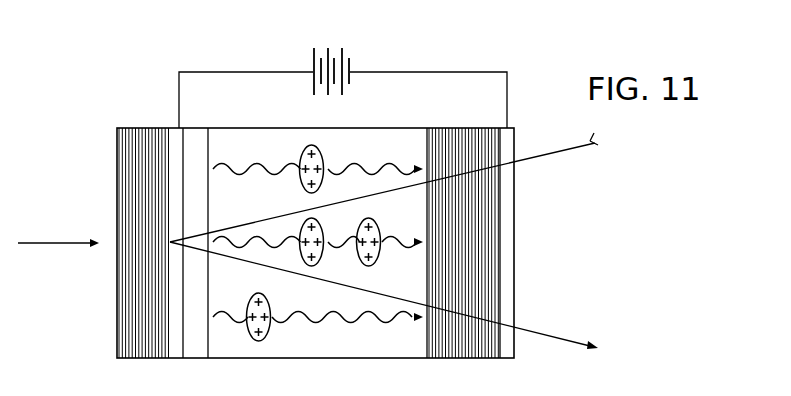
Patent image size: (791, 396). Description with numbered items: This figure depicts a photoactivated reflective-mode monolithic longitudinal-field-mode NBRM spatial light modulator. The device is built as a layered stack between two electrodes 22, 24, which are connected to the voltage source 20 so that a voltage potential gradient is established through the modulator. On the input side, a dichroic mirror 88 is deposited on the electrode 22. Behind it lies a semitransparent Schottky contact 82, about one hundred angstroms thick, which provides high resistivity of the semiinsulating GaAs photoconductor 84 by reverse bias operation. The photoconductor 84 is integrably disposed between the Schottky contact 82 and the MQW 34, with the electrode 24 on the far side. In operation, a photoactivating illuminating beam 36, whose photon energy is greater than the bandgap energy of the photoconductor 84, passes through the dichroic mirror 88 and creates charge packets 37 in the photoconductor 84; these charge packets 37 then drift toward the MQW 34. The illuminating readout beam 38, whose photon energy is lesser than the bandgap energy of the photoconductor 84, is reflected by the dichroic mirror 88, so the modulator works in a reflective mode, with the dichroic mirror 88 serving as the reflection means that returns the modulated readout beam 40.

The voltage source 20 is at (315, 83).
The electrode 22 is at (173, 358).
The electrode 24 is at (505, 360).
The MQW 34 is at (477, 348).
The photoactivating illuminating beam 36 is at (53, 242).
The charge packets 37 is at (265, 341).
The illuminating readout beam 38 is at (547, 155).
The modulated readout beam 40 is at (548, 333).
The semitransparent Schottky contact 82 is at (202, 358).
The semiinsulating GaAs photoconductor 84 is at (363, 358).
The dichroic mirror 88 is at (133, 357).